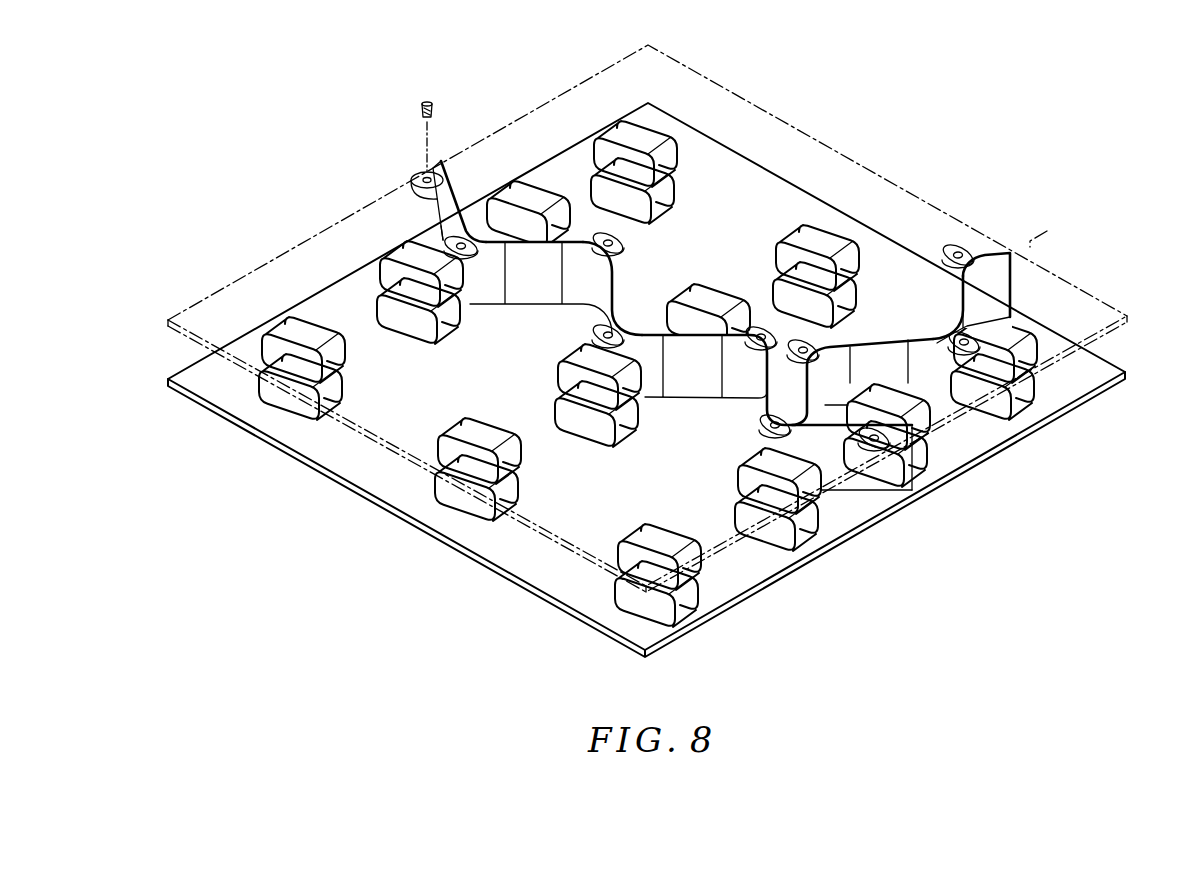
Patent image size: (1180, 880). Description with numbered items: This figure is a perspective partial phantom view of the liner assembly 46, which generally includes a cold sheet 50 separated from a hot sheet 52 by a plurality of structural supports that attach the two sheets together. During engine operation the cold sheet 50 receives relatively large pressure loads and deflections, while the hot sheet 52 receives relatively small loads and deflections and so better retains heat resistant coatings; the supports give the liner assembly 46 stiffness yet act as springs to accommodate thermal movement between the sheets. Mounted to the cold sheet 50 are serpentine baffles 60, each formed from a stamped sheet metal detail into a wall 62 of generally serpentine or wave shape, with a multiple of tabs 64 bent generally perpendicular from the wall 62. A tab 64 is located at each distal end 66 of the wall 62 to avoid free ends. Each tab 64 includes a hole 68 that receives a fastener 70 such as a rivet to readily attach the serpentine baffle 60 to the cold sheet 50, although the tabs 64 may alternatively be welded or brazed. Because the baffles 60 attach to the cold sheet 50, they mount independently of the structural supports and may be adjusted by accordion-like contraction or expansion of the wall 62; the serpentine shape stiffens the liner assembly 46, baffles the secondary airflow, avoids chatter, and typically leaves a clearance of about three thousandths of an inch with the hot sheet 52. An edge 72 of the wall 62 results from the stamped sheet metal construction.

The liner assembly 46 is at (1022, 393).
The cold sheet 50 is at (1040, 236).
The hot sheet 52 is at (1073, 388).
The serpentine baffle 60 is at (439, 218).
The wall 62 is at (597, 275).
The tab 64 is at (432, 177).
The distal end 66 is at (437, 205).
The hole 68 is at (420, 174).
The fastener 70 is at (428, 98).
The edge 72 is at (618, 300).